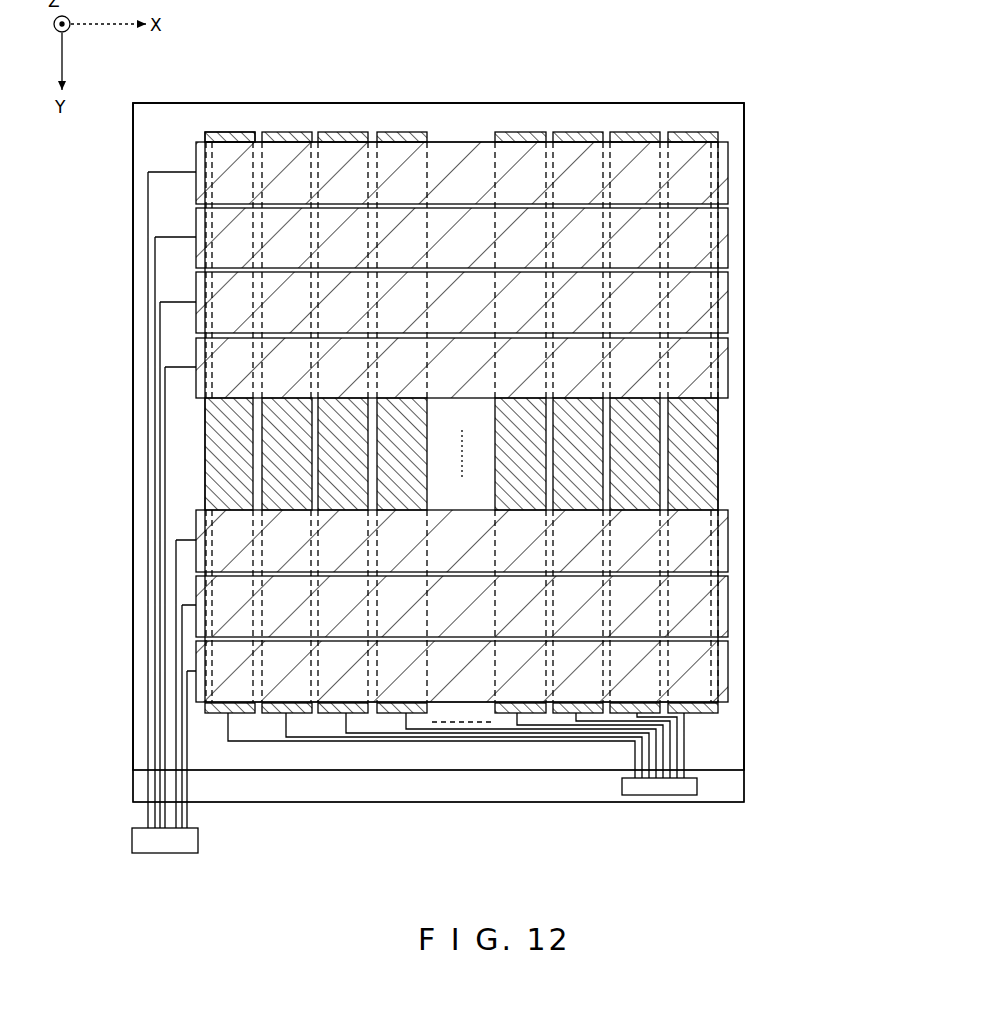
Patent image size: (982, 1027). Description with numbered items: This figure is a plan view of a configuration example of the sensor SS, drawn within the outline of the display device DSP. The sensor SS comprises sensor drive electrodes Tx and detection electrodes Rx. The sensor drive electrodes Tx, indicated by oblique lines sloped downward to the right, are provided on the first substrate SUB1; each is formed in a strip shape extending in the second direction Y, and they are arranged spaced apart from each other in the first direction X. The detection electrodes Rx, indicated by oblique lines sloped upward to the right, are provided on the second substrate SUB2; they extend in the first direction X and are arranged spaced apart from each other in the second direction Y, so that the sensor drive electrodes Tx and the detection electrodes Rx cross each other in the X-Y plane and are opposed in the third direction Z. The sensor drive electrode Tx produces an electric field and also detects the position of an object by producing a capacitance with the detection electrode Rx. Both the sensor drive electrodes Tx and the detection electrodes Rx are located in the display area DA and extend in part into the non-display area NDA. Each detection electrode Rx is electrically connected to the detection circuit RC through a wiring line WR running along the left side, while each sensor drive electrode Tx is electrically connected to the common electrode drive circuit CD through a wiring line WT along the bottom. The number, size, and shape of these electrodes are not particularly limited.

The sensor SS is at (207, 128).
The sensor drive electrode Tx is at (233, 130).
The detection electrode Rx is at (728, 169).
The display device DSP is at (768, 100).
The display area DA is at (201, 457).
The wiring line WR is at (146, 586).
The non-display area NDA is at (716, 735).
The second substrate SUB2 is at (742, 745).
The first substrate SUB1 is at (742, 787).
The wiring line WT is at (501, 752).
The common electrode drive circuit CD is at (656, 795).
The detection circuit RC is at (165, 853).